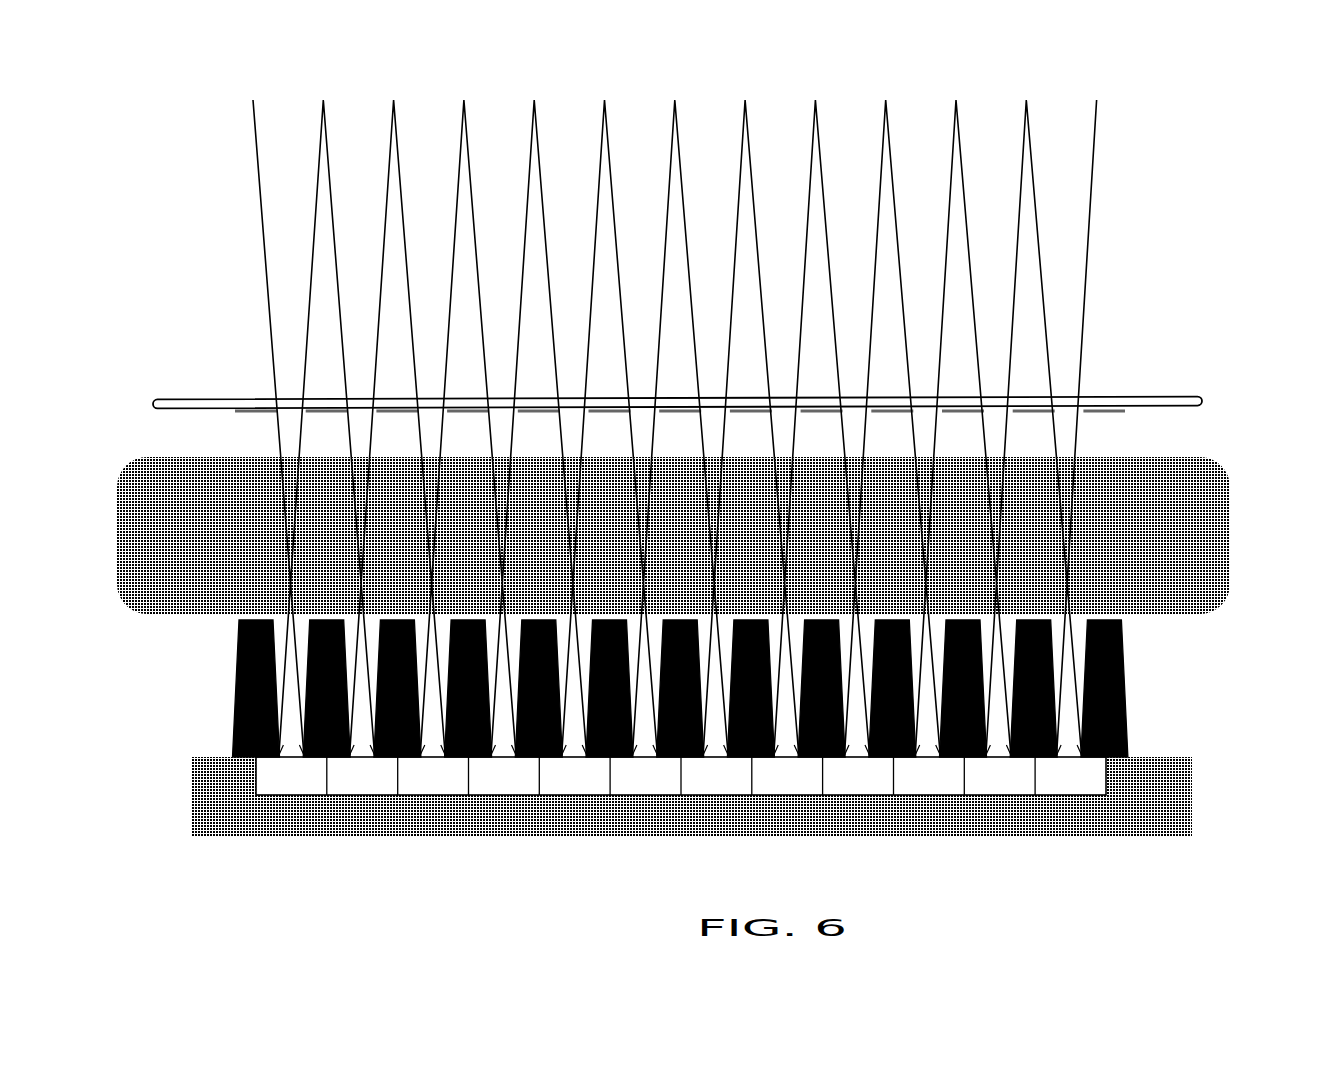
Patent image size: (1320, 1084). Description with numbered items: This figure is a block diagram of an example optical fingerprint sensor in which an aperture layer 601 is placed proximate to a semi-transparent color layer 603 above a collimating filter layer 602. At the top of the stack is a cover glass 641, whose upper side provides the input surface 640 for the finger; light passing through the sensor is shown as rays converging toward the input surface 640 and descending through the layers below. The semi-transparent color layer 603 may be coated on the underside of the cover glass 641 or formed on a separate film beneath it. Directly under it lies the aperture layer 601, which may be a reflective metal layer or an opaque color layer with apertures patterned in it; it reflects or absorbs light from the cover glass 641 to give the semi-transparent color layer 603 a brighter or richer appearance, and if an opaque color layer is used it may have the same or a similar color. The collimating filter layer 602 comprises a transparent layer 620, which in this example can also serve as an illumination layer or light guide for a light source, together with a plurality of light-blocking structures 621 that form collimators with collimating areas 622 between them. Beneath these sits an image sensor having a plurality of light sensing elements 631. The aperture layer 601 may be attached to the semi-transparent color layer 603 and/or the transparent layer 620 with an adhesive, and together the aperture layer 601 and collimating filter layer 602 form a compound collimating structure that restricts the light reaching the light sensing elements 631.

The input surface 640 is at (997, 127).
The cover glass 641 is at (1182, 288).
The semi-transparent color layer 603 is at (1202, 401).
The aperture layer 601 is at (1125, 410).
The transparent layer 620 is at (1222, 512).
The collimating filter layer 602 is at (1220, 425).
The light-blocking structures 621 is at (955, 617).
The collimating areas 622 is at (863, 617).
The light sensing elements 631 is at (1048, 790).